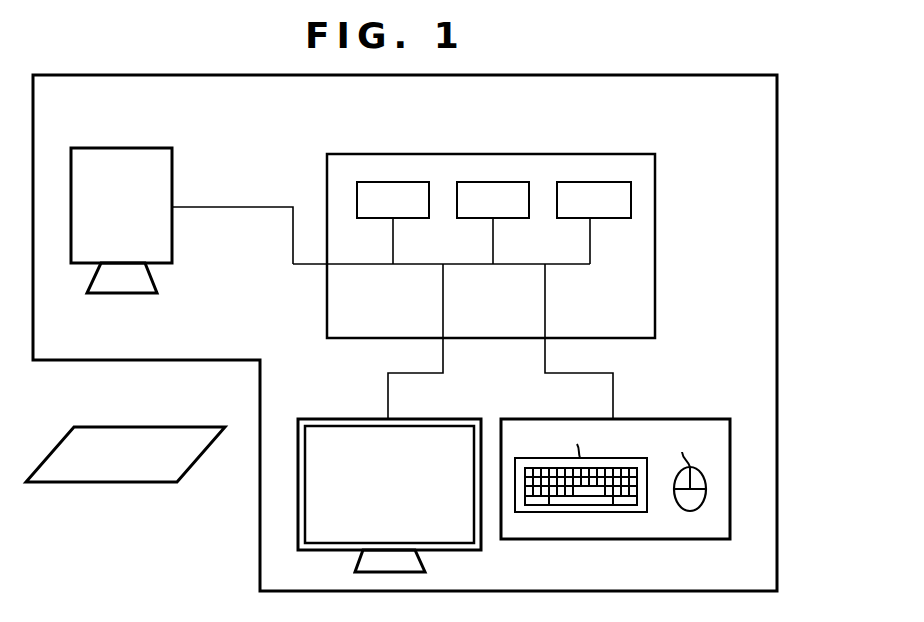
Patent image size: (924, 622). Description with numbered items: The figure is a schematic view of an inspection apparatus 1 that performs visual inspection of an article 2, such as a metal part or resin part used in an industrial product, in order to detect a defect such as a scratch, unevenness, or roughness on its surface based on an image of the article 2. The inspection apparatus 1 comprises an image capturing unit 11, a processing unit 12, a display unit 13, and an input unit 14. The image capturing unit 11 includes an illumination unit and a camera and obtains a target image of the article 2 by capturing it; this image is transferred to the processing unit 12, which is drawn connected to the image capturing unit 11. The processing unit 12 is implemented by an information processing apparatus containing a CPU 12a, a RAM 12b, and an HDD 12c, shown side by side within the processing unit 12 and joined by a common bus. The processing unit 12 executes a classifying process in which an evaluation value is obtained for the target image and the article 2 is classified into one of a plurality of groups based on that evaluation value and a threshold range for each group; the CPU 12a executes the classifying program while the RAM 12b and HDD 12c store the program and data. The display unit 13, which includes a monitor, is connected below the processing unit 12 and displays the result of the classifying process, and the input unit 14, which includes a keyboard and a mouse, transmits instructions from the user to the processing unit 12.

The inspection apparatus 1 is at (693, 74).
The article 2 is at (103, 483).
The image capturing unit 11 is at (120, 147).
The processing unit 12 is at (501, 261).
The CPU 12a is at (391, 181).
The RAM 12b is at (490, 181).
The HDD 12c is at (592, 181).
The display unit 13 is at (314, 418).
The input unit 14 is at (704, 418).